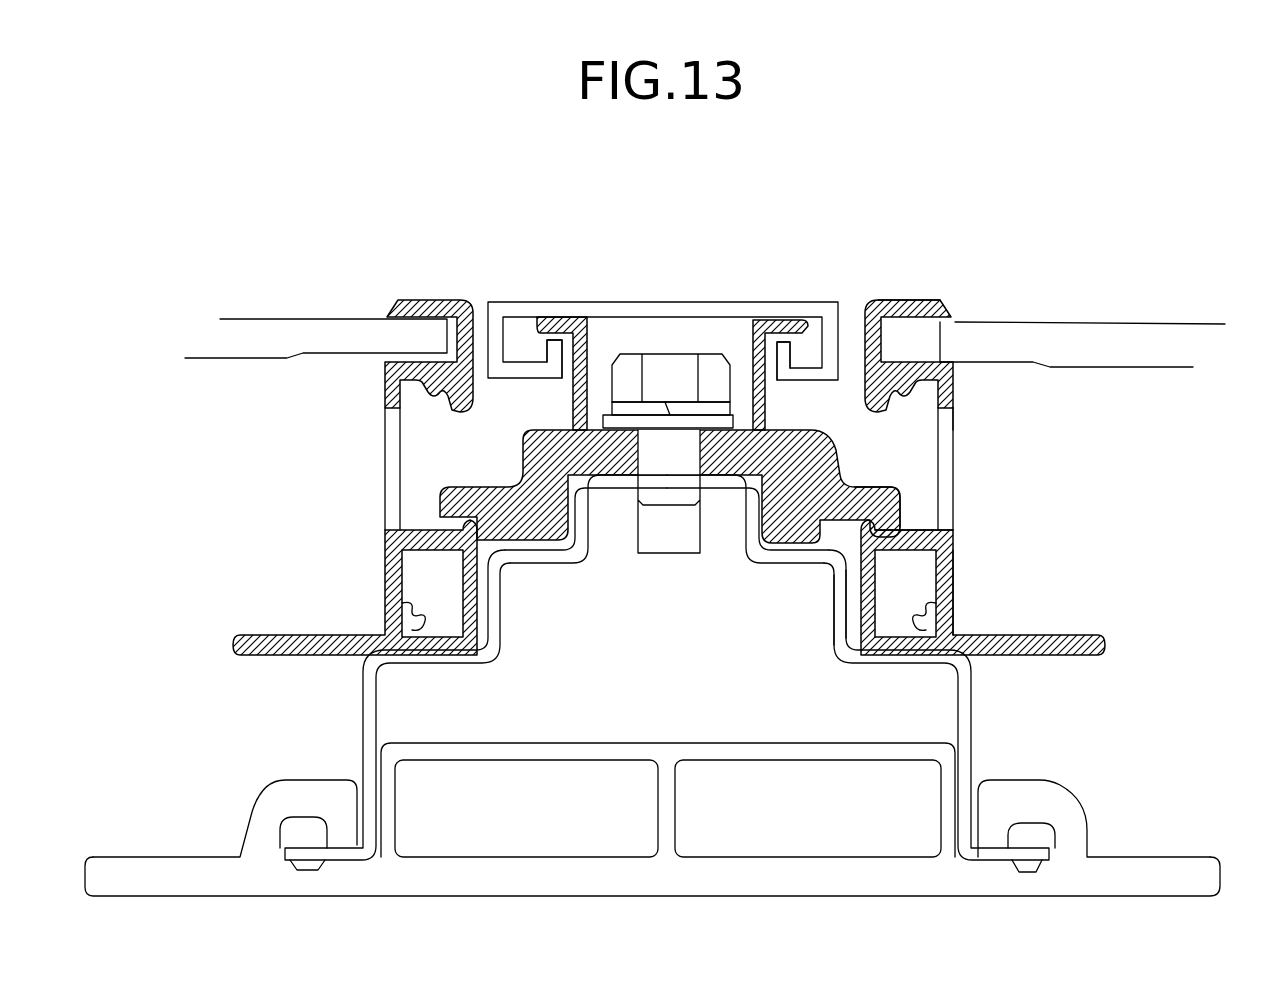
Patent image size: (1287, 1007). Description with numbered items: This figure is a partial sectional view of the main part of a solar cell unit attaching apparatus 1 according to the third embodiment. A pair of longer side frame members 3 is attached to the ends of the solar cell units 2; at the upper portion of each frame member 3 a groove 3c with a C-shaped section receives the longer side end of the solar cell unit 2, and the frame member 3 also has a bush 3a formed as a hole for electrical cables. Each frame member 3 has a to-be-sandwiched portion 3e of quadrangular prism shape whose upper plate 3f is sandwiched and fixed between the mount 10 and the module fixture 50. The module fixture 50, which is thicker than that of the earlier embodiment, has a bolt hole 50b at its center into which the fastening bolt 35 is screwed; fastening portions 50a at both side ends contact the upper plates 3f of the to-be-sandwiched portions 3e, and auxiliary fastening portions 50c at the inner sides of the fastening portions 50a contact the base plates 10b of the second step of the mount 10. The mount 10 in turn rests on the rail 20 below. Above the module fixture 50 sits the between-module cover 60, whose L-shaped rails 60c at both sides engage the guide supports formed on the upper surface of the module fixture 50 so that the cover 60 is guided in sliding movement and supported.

The solar cell module mounting structure 1 is at (996, 304).
The solar cell unit 2 is at (274, 328).
The longer side frame member 3 is at (383, 548).
The bush 3a is at (955, 425).
The groove 3c is at (892, 325).
The to-be-sandwiched portion 3e is at (950, 596).
The upper plate 3f is at (930, 537).
The mount 10 is at (503, 618).
The base plate of the second step 10b is at (840, 603).
The rail 20 is at (782, 893).
The fastening bolt 35 is at (722, 370).
The module fixture 50 is at (738, 475).
The fastening portion 50a is at (898, 503).
The bolt hole 50b is at (638, 478).
The auxiliary fastening portion 50c is at (777, 525).
The between-module cover 60 is at (565, 300).
The rail 60c is at (553, 355).